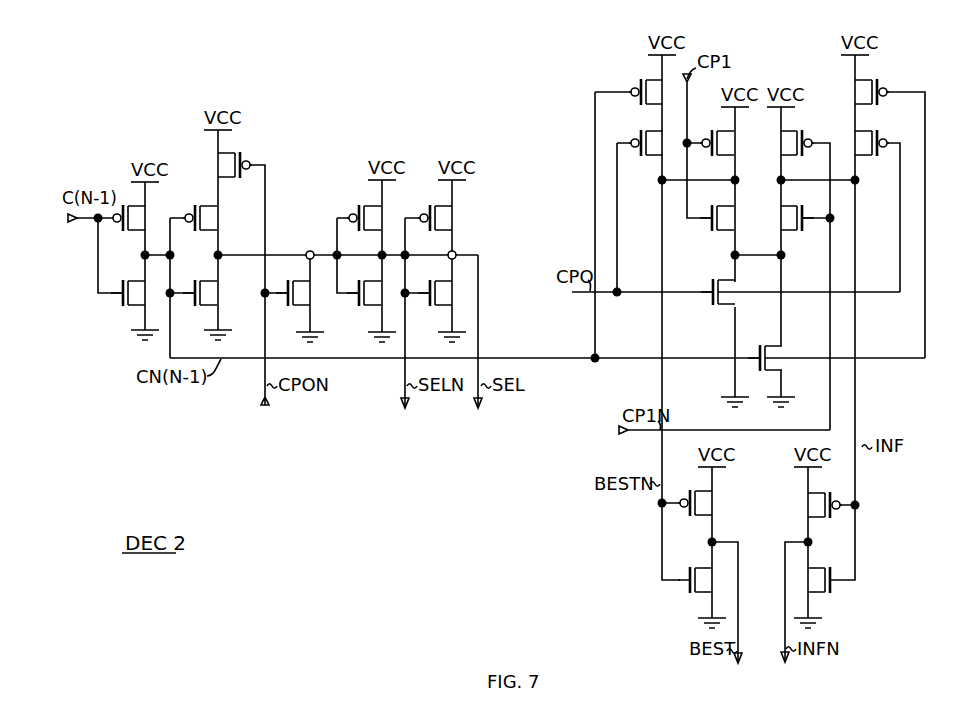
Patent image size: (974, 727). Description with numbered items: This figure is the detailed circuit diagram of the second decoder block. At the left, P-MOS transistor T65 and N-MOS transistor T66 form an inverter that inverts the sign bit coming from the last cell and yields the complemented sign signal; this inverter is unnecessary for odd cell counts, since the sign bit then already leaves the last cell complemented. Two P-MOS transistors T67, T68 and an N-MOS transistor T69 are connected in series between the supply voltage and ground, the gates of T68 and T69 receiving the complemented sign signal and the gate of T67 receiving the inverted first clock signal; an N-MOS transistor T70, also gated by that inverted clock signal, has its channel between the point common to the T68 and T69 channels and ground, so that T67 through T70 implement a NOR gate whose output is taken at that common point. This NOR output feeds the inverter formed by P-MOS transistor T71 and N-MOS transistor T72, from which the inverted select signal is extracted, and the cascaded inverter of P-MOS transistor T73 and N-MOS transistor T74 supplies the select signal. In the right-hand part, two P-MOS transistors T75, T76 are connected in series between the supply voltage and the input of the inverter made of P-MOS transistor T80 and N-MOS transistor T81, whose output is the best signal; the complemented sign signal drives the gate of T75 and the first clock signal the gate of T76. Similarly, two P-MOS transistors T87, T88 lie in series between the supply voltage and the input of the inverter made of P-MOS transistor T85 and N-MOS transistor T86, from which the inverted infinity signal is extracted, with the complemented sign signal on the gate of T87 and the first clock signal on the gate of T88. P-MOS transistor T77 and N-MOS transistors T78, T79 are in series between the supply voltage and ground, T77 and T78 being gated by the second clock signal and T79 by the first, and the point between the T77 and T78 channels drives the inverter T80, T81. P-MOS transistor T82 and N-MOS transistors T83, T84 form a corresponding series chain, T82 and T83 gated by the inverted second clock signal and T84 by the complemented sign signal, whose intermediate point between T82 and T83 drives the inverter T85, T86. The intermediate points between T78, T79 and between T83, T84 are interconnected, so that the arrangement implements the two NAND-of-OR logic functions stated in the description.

The P-MOS transistor T65 is at (140, 218).
The N-MOS transistor T66 is at (140, 293).
The P-MOS transistor T67 is at (221, 165).
The P-MOS transistor T68 is at (213, 218).
The N-MOS transistor T69 is at (213, 293).
The N-MOS transistor T70 is at (306, 293).
The P-MOS transistor T71 is at (377, 218).
The N-MOS transistor T72 is at (377, 293).
The P-MOS transistor T73 is at (448, 218).
The N-MOS transistor T74 is at (448, 293).
The P-MOS transistor T75 is at (659, 92).
The P-MOS transistor T76 is at (659, 143).
The P-MOS transistor T77 is at (730, 143).
The N-MOS transistor T78 is at (730, 218).
The N-MOS transistor T79 is at (722, 309).
The P-MOS transistor T80 is at (708, 503).
The N-MOS transistor T81 is at (706, 580).
The P-MOS transistor T82 is at (790, 143).
The N-MOS transistor T83 is at (790, 218).
The N-MOS transistor T84 is at (774, 345).
The P-MOS transistor T85 is at (807, 518).
The N-MOS transistor T86 is at (821, 593).
The P-MOS transistor T87 is at (860, 92).
The P-MOS transistor T88 is at (862, 143).